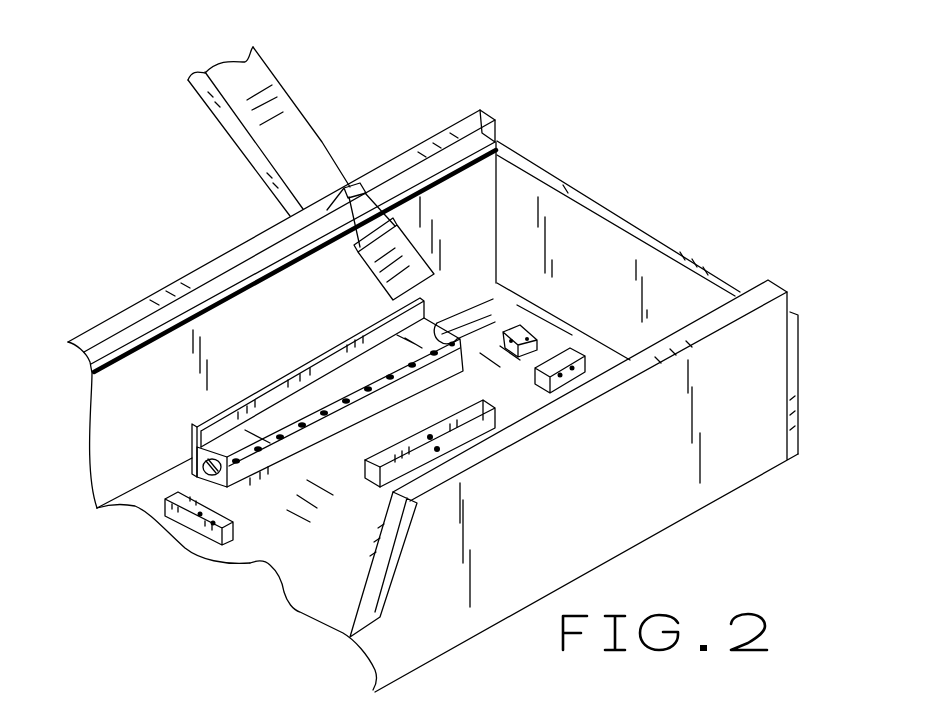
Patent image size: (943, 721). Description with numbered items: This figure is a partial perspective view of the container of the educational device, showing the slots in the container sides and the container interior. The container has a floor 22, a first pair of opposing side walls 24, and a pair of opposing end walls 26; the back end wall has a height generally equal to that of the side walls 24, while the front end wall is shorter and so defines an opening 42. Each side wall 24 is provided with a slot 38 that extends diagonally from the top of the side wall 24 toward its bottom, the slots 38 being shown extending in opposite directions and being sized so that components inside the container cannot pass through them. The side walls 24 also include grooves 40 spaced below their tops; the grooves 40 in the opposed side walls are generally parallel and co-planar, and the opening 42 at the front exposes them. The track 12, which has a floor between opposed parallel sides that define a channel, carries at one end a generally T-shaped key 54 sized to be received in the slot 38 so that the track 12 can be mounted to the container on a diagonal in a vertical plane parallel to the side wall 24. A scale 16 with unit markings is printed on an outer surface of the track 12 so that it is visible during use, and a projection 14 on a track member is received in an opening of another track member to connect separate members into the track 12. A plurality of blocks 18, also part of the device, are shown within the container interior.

The track 12 is at (273, 133).
The projection 14 is at (477, 315).
The scale 16 is at (285, 447).
The block 18 is at (183, 516).
The floor 22 is at (97, 512).
The side wall 24 is at (159, 365).
The end wall 26 is at (650, 273).
The slot 38 is at (345, 192).
The groove 40 is at (233, 294).
The opening 42 is at (498, 130).
The key 54 is at (405, 236).